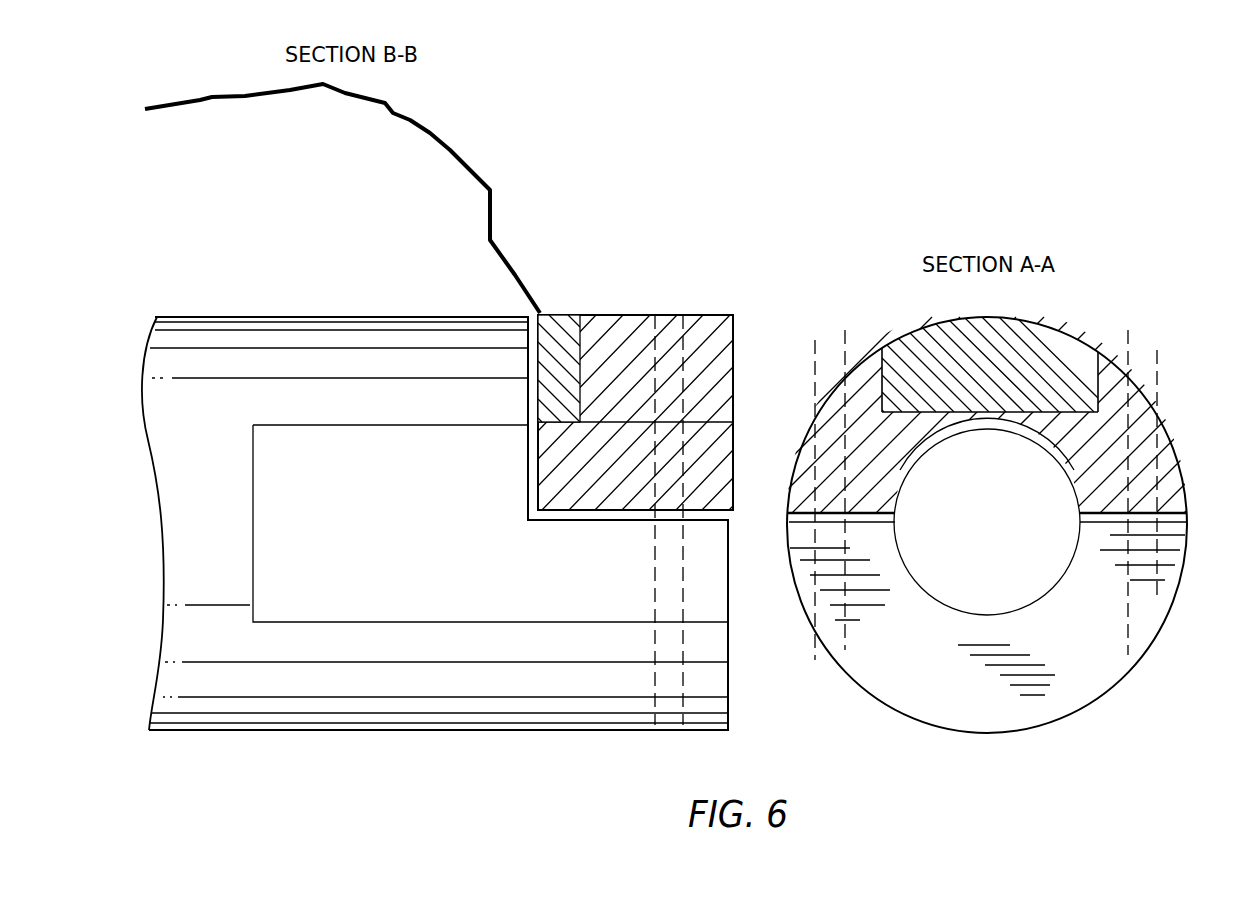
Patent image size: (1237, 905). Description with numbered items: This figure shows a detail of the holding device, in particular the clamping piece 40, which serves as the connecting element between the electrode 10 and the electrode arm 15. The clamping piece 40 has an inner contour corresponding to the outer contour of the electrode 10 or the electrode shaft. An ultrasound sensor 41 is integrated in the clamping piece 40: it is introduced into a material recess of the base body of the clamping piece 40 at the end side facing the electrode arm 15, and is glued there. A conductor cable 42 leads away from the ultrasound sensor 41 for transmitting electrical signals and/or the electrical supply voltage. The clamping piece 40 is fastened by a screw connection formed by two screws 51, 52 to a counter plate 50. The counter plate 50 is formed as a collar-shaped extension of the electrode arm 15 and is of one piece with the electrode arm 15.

The electrode 10 is at (423, 580).
The electrode arm 15 is at (325, 363).
The clamping piece 40 is at (728, 495).
The ultrasound sensor 41 is at (577, 343).
The conductor cable 42 is at (492, 224).
The counter plate 50 is at (1020, 708).
The screw 51 is at (830, 462).
The screw 52 is at (1155, 443).